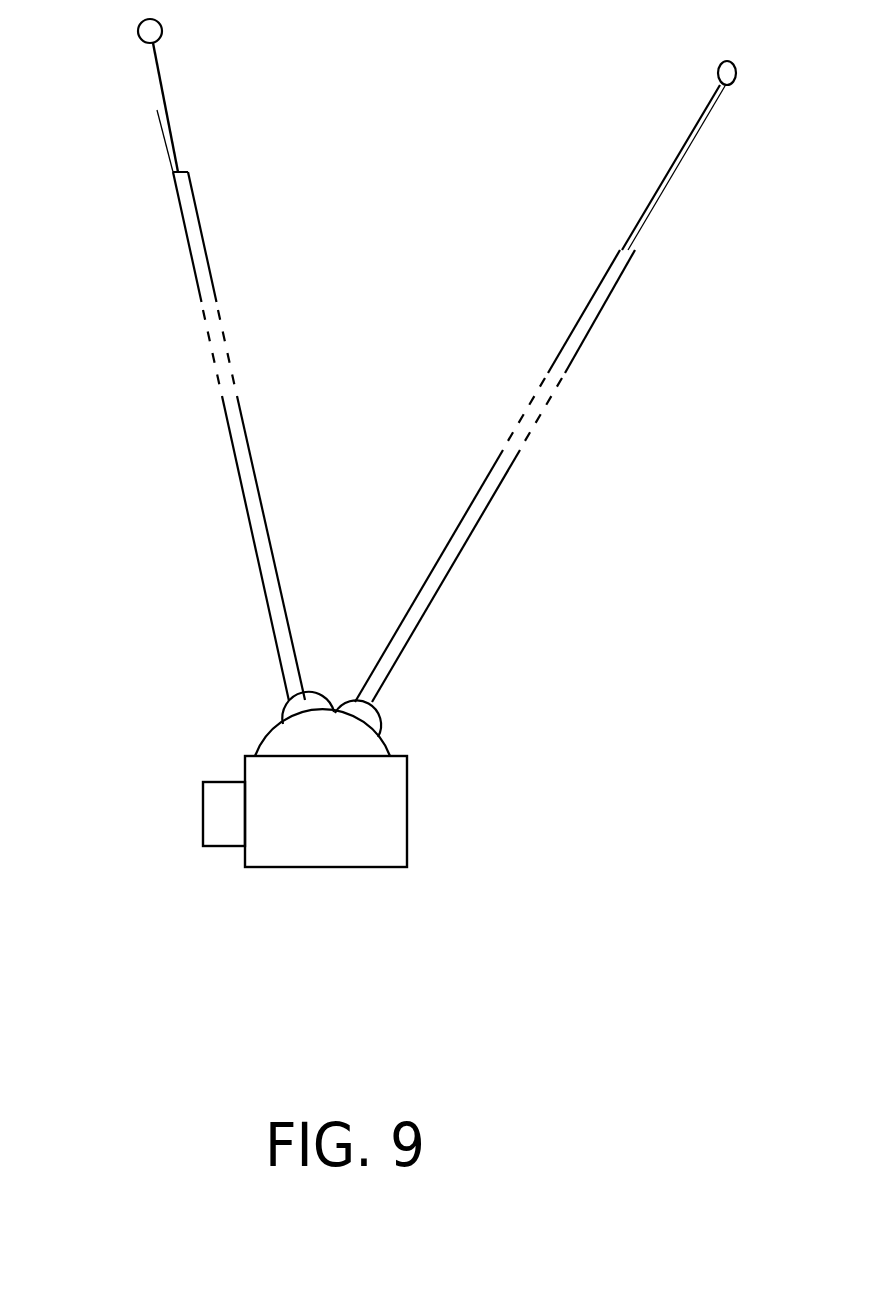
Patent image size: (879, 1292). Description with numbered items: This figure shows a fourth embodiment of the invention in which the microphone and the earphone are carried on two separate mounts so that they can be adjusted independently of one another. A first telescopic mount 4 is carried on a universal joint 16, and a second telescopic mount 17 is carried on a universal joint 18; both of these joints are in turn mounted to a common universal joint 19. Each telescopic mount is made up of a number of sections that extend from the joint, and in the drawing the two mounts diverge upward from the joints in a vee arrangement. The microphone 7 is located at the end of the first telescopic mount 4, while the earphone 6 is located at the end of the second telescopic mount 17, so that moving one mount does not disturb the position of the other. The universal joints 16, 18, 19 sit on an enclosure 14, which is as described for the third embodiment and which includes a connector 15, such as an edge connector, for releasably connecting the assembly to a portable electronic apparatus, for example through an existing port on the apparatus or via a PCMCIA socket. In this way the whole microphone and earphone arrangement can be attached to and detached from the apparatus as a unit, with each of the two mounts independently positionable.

The microphone 7 is at (137, 28).
The first telescopic mount 4 is at (180, 232).
The earphone 6 is at (736, 75).
The second telescopic mount 17 is at (488, 514).
The universal joint 16 is at (287, 708).
The universal joint 18 is at (378, 712).
The universal joint 19 is at (377, 744).
The connector 15 is at (197, 813).
The enclosure 14 is at (323, 852).